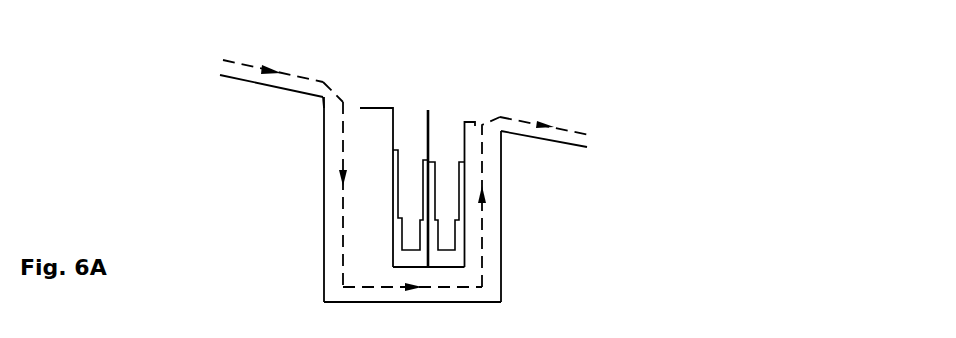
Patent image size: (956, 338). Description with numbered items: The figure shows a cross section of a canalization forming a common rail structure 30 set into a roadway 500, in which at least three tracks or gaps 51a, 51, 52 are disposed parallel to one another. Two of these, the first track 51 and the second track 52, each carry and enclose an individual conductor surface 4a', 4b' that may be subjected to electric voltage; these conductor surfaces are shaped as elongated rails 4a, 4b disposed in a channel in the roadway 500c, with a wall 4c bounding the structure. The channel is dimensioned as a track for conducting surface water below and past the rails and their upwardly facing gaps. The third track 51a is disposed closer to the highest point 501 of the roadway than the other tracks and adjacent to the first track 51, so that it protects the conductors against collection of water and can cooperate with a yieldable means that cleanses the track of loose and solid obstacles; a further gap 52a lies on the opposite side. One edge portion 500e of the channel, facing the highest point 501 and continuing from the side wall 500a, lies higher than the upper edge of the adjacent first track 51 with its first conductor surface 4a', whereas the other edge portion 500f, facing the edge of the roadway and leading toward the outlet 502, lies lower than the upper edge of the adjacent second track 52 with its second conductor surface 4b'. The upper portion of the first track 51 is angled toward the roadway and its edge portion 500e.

The rail 4a is at (299, 241).
The first conductor surface 4a' is at (351, 276).
The rail 4b is at (545, 233).
The second conductor surface 4b' is at (500, 253).
The cup upper wall 4c is at (371, 107).
The common rail structure 30 is at (505, 287).
The first track 51 is at (409, 135).
The third track 51a is at (363, 163).
The second track 52 is at (445, 135).
The right flow passage 52a is at (493, 192).
The roadway 500 is at (273, 88).
The side wall of flow guide 500a is at (323, 234).
The channel in roadway 500c is at (311, 93).
The edge portion of the channel 500e is at (323, 98).
The other edge portion of the channel 500f is at (511, 129).
The highest point of the roadway 501 is at (261, 57).
The outflow 502 is at (556, 127).